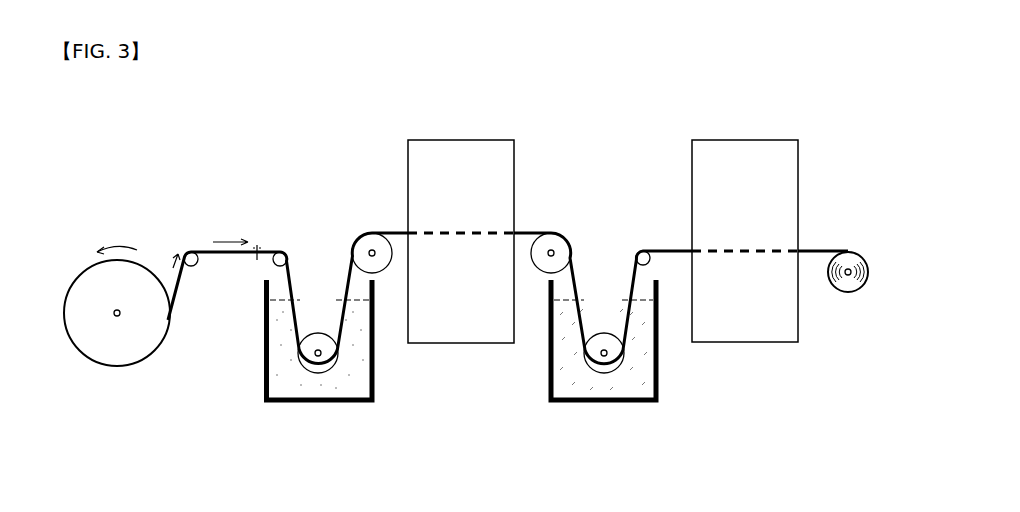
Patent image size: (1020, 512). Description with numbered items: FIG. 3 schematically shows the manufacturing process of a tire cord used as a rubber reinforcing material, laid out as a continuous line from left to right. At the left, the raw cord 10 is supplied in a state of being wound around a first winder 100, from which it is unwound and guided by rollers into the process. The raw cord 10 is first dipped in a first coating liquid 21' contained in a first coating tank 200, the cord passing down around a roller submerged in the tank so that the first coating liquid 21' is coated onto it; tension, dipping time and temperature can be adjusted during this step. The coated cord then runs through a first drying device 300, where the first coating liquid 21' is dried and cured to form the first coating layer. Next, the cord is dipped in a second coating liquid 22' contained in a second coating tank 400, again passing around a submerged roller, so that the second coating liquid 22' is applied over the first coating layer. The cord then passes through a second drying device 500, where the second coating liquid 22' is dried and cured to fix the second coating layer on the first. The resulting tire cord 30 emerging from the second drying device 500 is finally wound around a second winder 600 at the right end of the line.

The raw cord 10 is at (199, 250).
The tire cord 30 is at (822, 249).
The first winder 100 is at (120, 362).
The first coating tank 200 is at (344, 402).
The first coating liquid 21' is at (319, 377).
The first drying device 300 is at (479, 140).
The second coating tank 400 is at (628, 402).
The second coating liquid 22' is at (603, 377).
The second drying device 500 is at (762, 140).
The second winder 600 is at (846, 294).